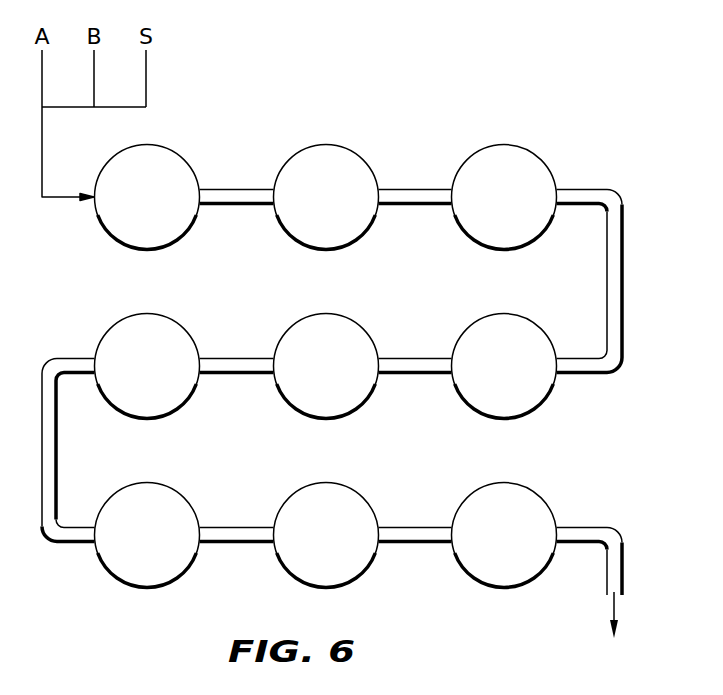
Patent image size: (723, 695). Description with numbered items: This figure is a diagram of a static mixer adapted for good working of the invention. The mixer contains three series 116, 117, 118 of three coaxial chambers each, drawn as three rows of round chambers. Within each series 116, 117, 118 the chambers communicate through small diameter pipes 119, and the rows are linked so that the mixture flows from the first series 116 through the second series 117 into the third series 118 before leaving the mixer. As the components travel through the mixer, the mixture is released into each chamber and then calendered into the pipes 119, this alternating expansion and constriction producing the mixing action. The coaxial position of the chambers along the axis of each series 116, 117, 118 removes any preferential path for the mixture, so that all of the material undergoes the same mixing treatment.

The series of coaxial chambers 116 is at (641, 197).
The series of coaxial chambers 117 is at (645, 363).
The series of coaxial chambers 118 is at (643, 538).
The small diameter pipes 119 is at (239, 190).